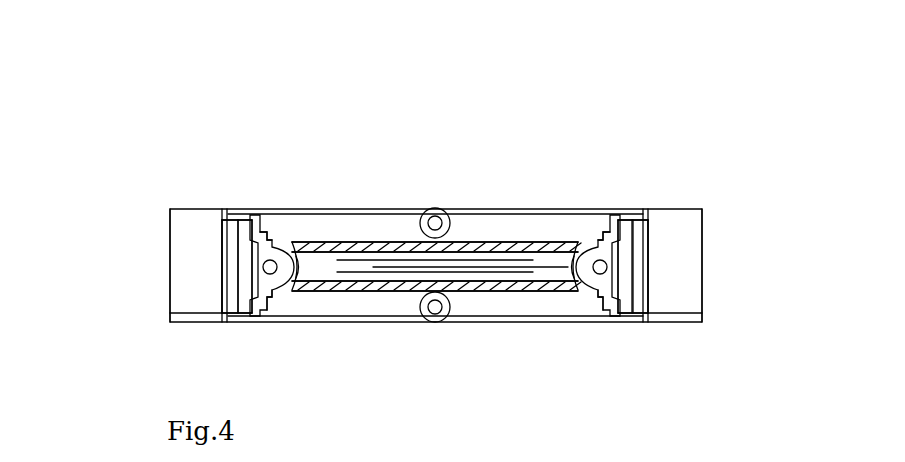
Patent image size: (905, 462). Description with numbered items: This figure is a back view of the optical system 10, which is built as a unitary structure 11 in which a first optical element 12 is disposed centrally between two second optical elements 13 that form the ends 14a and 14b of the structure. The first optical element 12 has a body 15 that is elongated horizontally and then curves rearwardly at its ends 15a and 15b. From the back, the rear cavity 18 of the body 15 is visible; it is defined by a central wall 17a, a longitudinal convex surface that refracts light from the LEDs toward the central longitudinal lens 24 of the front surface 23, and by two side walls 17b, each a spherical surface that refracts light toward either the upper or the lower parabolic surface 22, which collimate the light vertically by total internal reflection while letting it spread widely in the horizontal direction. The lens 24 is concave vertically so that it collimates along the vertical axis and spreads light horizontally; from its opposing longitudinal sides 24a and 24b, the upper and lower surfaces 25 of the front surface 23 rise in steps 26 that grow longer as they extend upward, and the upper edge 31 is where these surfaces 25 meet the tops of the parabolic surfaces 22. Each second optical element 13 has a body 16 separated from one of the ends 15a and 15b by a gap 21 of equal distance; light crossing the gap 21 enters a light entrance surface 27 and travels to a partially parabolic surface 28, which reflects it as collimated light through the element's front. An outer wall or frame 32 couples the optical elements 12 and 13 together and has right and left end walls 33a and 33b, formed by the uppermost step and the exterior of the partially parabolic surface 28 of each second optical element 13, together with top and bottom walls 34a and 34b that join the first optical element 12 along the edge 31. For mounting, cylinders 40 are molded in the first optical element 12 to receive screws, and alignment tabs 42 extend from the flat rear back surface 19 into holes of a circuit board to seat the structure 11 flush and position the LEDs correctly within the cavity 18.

The optical system 10 is at (491, 64).
The unitary structure 11 is at (688, 314).
The first optical element 12 is at (402, 208).
The second optical element 13 is at (260, 265).
The end of structure 14a is at (702, 268).
The end of structure 14b is at (170, 222).
The body of first optical element 15 is at (487, 208).
The end of body 15a is at (672, 245).
The end of body 15b is at (265, 280).
The body of second optical element 16 is at (184, 216).
The central wall 17a is at (362, 275).
The side wall 17b is at (543, 208).
The rear cavity 18 is at (492, 270).
The flat rear back surface 19 is at (278, 283).
The gap 21 is at (248, 283).
The parabolic surface 22 is at (298, 236).
The front surface 23 is at (262, 226).
The central longitudinal lens 24 is at (262, 254).
The longitudinal side of lens 24a is at (268, 243).
The longitudinal side of lens 24b is at (272, 318).
The upper and lower surfaces 25 is at (265, 235).
The steps 26 is at (257, 222).
The light entrance surface 27 is at (233, 210).
The partially parabolic surface 28 is at (178, 290).
The upper edge 31 is at (257, 222).
The outer wall or frame 32 is at (522, 300).
The right end wall 33a is at (692, 316).
The left end wall 33b is at (177, 302).
The top wall 34a is at (393, 212).
The bottom wall 34b is at (415, 322).
The cylinders 40 is at (434, 208).
The alignment tabs 42 is at (285, 276).